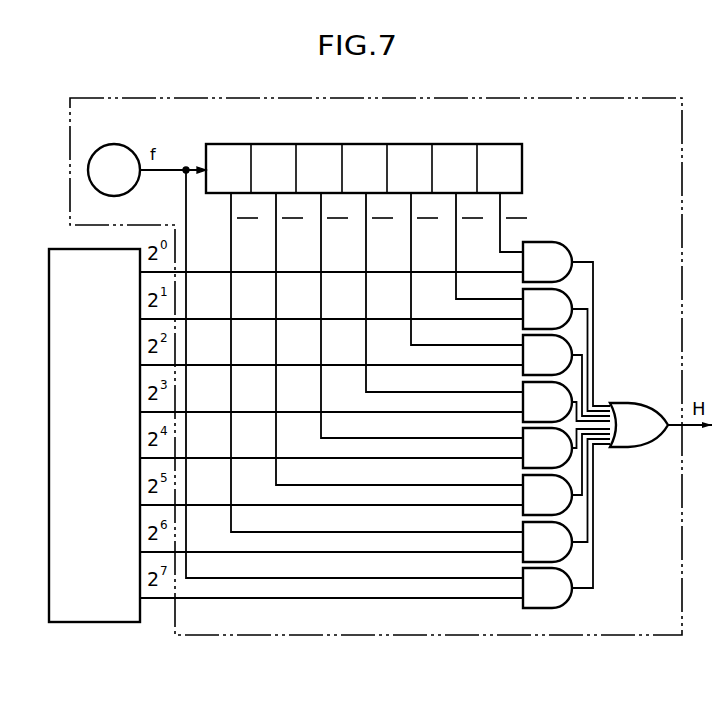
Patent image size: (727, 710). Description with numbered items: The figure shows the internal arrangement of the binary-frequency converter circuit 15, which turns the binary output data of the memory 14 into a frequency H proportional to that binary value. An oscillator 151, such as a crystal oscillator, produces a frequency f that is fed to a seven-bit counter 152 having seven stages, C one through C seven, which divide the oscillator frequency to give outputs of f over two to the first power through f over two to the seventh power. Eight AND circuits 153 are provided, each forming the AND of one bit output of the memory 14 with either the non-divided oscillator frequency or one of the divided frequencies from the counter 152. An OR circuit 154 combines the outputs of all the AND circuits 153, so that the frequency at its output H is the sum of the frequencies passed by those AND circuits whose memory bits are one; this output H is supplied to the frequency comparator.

The memory 14 is at (101, 623).
The binary-frequency converter circuit 15 is at (430, 636).
The oscillator 151 is at (115, 144).
The 7-bit counter 152 is at (405, 144).
The AND circuits 153 is at (546, 608).
The OR circuit 154 is at (640, 447).